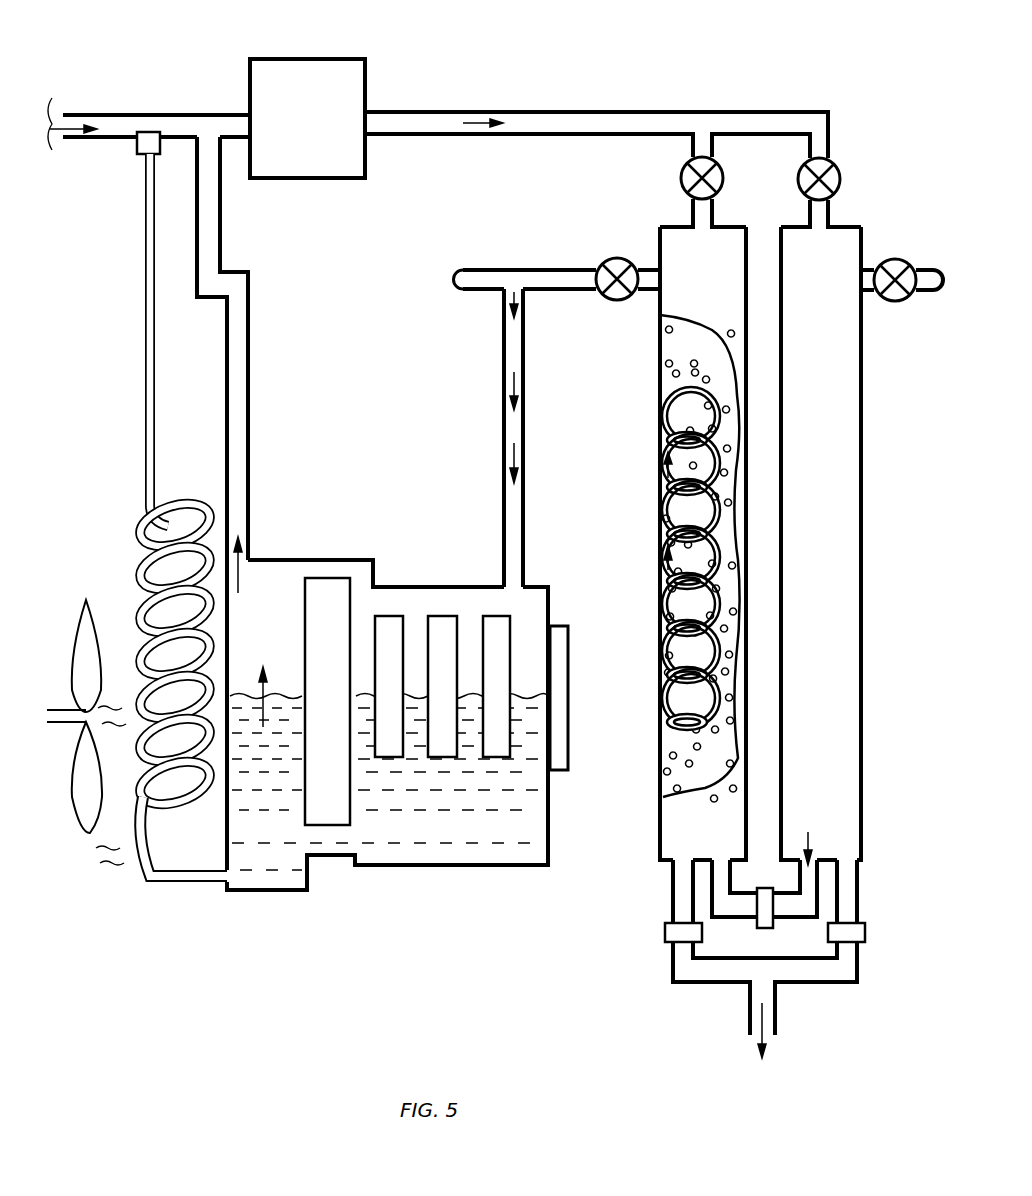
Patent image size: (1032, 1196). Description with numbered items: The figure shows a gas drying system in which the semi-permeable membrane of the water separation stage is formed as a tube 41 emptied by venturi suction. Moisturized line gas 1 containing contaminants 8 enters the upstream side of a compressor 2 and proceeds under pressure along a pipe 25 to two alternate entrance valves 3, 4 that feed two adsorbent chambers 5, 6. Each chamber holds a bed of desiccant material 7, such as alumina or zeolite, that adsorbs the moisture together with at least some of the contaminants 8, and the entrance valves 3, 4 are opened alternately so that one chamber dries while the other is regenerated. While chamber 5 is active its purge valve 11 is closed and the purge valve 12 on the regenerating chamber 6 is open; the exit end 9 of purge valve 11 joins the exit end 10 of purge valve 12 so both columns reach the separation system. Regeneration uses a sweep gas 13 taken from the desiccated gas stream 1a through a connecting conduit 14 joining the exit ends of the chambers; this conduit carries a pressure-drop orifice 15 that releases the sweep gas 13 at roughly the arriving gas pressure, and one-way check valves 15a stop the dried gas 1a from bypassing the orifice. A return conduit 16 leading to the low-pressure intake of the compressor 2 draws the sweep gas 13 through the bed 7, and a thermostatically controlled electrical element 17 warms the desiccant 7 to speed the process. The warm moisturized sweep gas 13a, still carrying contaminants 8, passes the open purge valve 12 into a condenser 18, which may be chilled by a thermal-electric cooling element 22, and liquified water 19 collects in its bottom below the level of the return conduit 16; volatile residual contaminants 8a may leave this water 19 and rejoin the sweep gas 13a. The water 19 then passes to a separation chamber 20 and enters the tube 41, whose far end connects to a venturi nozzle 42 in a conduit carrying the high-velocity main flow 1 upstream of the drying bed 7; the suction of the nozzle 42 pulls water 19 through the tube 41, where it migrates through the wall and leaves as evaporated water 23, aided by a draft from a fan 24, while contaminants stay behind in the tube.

The moisturized line gas 1 is at (149, 120).
The desiccated gas stream 1a is at (808, 838).
The compressor 2 is at (297, 59).
The entrance valve 3 is at (841, 181).
The entrance valve 4 is at (723, 188).
The adsorbent chamber 5 is at (862, 800).
The adsorbent chamber 6 is at (748, 800).
The desiccant material 7 is at (680, 358).
The contaminants 8 is at (668, 560).
The residual contaminants 8a is at (257, 688).
The exit end of purge valve 11 9 is at (935, 290).
The exit end of purge valve 12 10 is at (462, 283).
The purge valve 11 is at (903, 259).
The purge valve 12 is at (620, 258).
The sweep gas 13 is at (665, 470).
The moisturized sweep gas 13a is at (511, 292).
The connecting conduit 14 is at (793, 906).
The pressure-drop orifice 15 is at (757, 927).
The one-way check valve 15a is at (665, 933).
The return conduit 16 is at (225, 395).
The thermostatically controlled electrical element 17 is at (672, 437).
The condenser 18 is at (435, 587).
The liquified water 19 is at (432, 852).
The separation chamber 20 is at (282, 560).
The thermal-electric cooling element 22 is at (557, 755).
The evaporated water 23 is at (110, 707).
The fan 24 is at (88, 808).
The air pipe 25 is at (664, 112).
The semi-permeable tube 41 is at (135, 558).
The venturi nozzle 42 is at (137, 153).